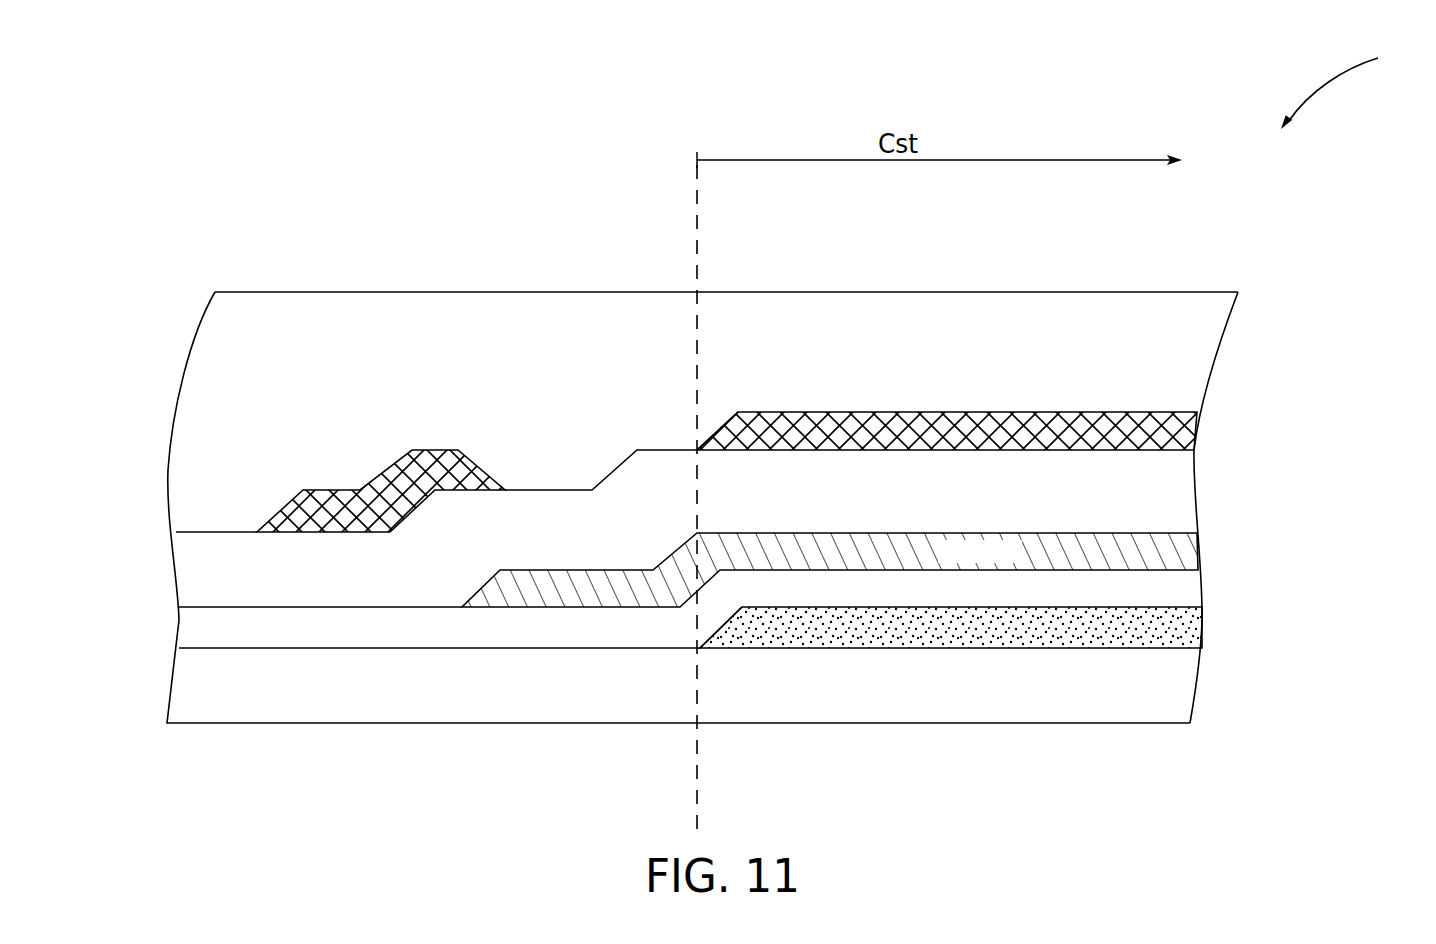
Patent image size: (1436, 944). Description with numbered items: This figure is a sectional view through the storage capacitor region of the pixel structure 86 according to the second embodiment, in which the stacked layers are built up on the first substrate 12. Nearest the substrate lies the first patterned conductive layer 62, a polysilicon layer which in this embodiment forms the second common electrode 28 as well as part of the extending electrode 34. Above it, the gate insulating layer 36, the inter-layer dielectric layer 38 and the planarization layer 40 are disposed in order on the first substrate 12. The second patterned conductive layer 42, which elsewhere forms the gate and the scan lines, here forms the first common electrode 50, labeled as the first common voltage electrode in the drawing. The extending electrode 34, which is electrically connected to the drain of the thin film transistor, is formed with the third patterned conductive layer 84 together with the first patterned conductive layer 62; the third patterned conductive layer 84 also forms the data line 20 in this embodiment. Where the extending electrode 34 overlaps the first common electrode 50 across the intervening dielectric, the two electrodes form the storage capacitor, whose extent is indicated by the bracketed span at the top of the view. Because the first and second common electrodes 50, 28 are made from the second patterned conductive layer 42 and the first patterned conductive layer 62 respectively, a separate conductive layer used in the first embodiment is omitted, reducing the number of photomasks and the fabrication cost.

The first substrate 12 is at (1183, 695).
The data line 20 is at (356, 498).
The second common electrode 28 is at (1192, 627).
The extending electrode 34 is at (1190, 432).
The gate insulating layer 36 is at (1192, 595).
The inter-layer dielectric layer 38 is at (1183, 487).
The planarization layer 40 is at (1192, 360).
The second patterned conductive layer 42 is at (483, 590).
The first common electrode 50 is at (1183, 547).
The first patterned conductive layer 62 is at (730, 618).
The third patterned conductive layer 84 is at (1162, 413).
The pixel structure 86 is at (1347, 82).